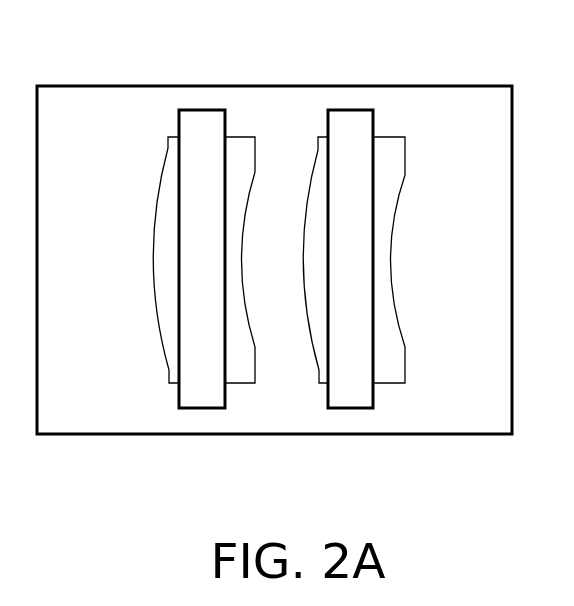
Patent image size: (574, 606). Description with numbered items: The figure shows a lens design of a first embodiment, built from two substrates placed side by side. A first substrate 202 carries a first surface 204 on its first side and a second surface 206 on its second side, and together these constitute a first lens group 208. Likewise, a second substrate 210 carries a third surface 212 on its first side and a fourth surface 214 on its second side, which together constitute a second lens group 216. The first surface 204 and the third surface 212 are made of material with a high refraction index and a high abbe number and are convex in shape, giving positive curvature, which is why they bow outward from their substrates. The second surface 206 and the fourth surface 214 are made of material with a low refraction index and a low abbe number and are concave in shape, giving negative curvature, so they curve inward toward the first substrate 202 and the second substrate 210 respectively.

The first substrate 202 is at (203, 118).
The first surface 204 is at (172, 146).
The second surface 206 is at (235, 145).
The first lens group 208 is at (117, 37).
The second substrate 210 is at (352, 400).
The third surface 212 is at (323, 386).
The fourth surface 214 is at (383, 374).
The second lens group 216 is at (265, 481).